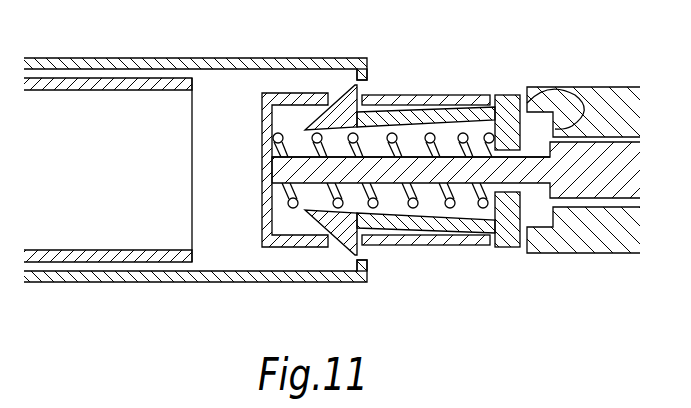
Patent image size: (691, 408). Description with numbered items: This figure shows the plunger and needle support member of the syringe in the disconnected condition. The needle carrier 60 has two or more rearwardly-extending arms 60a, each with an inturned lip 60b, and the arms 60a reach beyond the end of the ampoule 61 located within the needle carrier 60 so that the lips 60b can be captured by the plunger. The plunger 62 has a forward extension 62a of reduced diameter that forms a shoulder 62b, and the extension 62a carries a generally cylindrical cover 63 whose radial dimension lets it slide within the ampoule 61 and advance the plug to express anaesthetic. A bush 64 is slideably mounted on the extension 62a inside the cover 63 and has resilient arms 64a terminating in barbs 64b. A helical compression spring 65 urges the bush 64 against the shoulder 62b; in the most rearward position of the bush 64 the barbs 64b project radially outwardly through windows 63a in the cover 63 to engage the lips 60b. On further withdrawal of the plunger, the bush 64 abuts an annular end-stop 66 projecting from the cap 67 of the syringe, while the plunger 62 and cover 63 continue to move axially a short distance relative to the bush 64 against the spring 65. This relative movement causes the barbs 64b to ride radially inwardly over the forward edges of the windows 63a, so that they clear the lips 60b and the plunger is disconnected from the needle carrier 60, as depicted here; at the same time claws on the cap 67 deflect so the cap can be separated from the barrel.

The needle carrier 60 is at (83, 63).
The rearwardly-extending arms 60a is at (244, 62).
The inturned lip 60b is at (362, 74).
The ampoule 61 is at (121, 91).
The plunger 62 is at (612, 185).
The forward extension 62a is at (461, 172).
The shoulder 62b is at (603, 88).
The cover 63 is at (300, 248).
The windows 63a is at (334, 104).
The bush 64 is at (507, 100).
The resilient arms 64a is at (447, 116).
The barbs 64b is at (350, 100).
The helical compression spring 65 is at (305, 131).
The annular end-stop 66 is at (563, 87).
The cap 67 is at (569, 243).